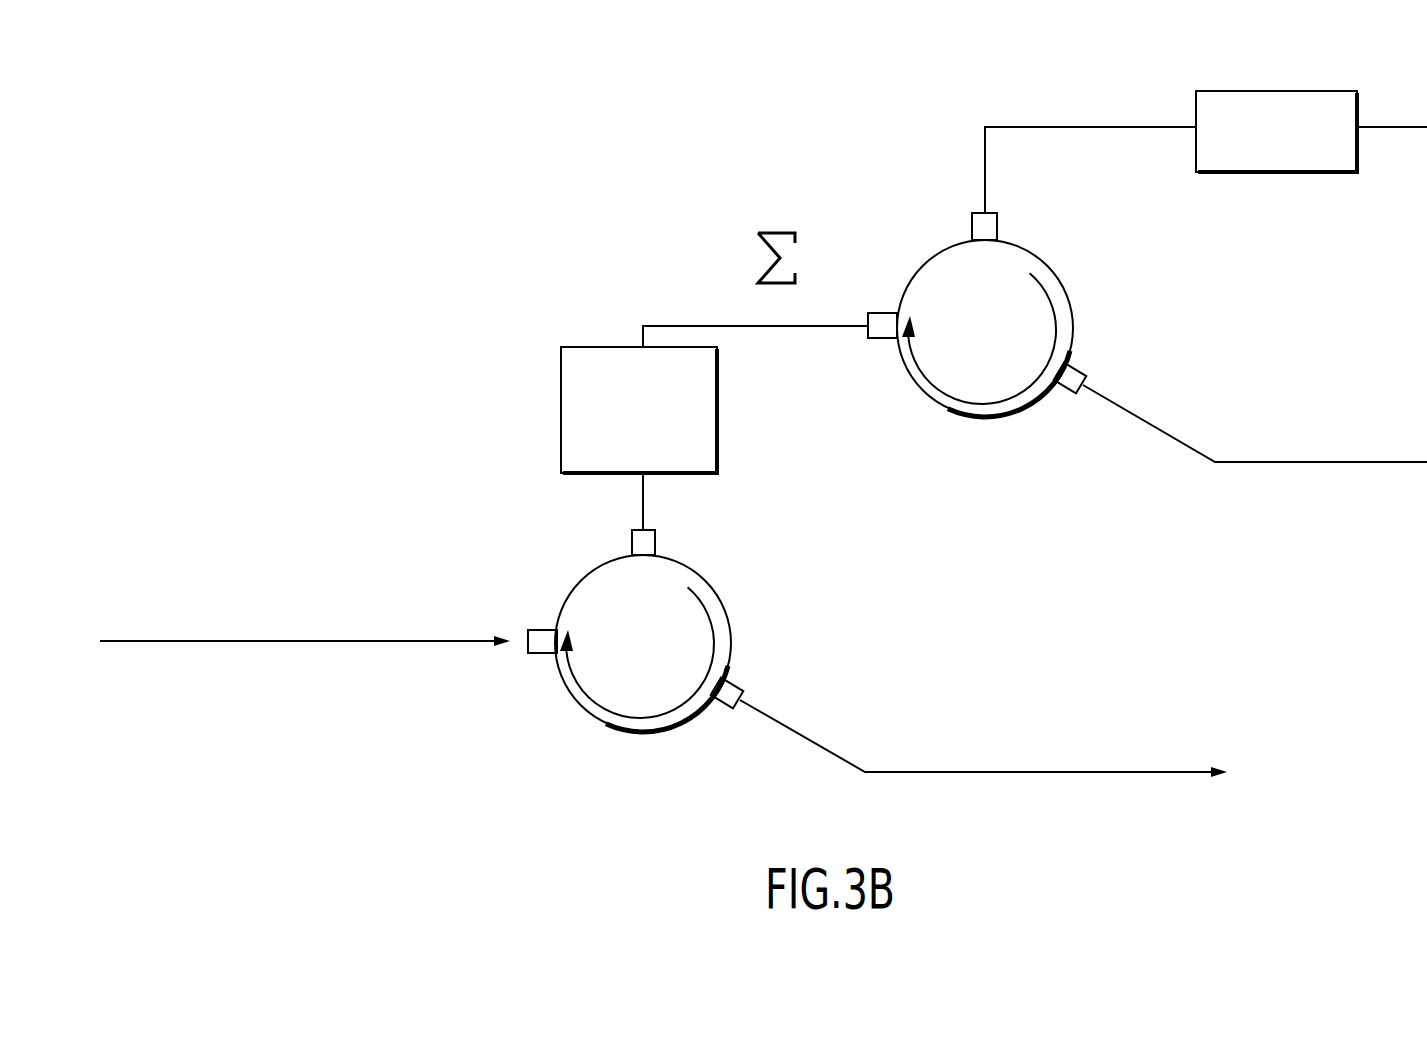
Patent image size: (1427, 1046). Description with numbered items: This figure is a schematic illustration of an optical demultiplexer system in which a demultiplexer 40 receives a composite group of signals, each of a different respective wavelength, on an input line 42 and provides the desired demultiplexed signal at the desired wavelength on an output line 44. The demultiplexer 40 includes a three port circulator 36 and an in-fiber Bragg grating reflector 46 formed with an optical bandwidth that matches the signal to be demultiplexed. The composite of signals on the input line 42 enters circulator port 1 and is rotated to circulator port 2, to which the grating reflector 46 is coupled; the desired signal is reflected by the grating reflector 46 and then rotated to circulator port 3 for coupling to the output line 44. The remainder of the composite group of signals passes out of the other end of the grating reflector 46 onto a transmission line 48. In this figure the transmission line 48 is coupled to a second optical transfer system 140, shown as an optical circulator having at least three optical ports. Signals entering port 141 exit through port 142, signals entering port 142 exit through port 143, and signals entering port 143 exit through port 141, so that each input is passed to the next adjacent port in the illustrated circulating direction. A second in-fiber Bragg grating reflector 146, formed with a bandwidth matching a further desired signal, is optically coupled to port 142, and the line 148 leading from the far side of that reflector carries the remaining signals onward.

The circulator port 1 is at (540, 655).
The circulator port 2 is at (632, 540).
The circulator port 3 is at (722, 708).
The three port circulator 36 is at (707, 573).
The demultiplexer 40 is at (700, 540).
The input line 42 is at (295, 641).
The output line 44 is at (1010, 772).
The in-fiber Bragg grating reflector 46 is at (560, 388).
The transmission line 48 is at (676, 326).
The second optical transfer system 140 is at (1040, 262).
The port 141 is at (880, 340).
The port 142 is at (972, 225).
The port 143 is at (1080, 365).
The in-fiber Bragg grating reflector 146 is at (1292, 172).
The output fiber 148 is at (1400, 127).